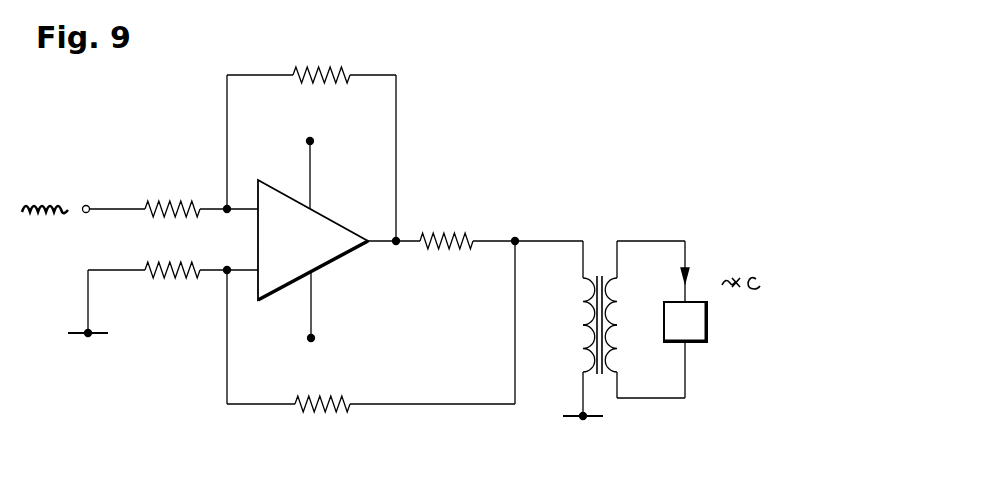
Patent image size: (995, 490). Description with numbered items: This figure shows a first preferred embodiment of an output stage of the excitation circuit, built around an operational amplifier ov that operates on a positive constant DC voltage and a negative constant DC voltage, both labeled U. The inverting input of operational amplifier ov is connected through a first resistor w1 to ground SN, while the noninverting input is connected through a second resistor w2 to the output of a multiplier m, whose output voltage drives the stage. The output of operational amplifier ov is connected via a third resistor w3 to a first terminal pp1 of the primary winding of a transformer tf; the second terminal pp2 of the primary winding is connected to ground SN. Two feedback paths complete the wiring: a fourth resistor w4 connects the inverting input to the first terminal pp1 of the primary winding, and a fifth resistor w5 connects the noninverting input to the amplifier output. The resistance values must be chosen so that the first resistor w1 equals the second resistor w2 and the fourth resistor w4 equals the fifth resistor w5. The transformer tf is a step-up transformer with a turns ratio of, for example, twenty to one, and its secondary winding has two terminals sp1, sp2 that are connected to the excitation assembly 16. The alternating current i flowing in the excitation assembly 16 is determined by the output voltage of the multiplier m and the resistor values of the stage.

The first resistor w1 is at (188, 273).
The second resistor w2 is at (172, 207).
The third resistor w3 is at (447, 241).
The fourth resistor w4 is at (314, 412).
The fifth resistor w5 is at (317, 73).
The operational amplifier ov is at (333, 250).
The transformer tf is at (606, 281).
The first terminal of the primary winding pp1 is at (561, 301).
The second terminal of the primary winding pp2 is at (561, 356).
The first terminal of the secondary winding sp1 is at (637, 299).
The second terminal of the secondary winding sp2 is at (637, 356).
The excitation assembly 16 is at (692, 322).
The multiplier m is at (83, 210).
The ground SN is at (335, 365).
The constant DC voltage U is at (333, 241).
The alternating current i is at (732, 274).